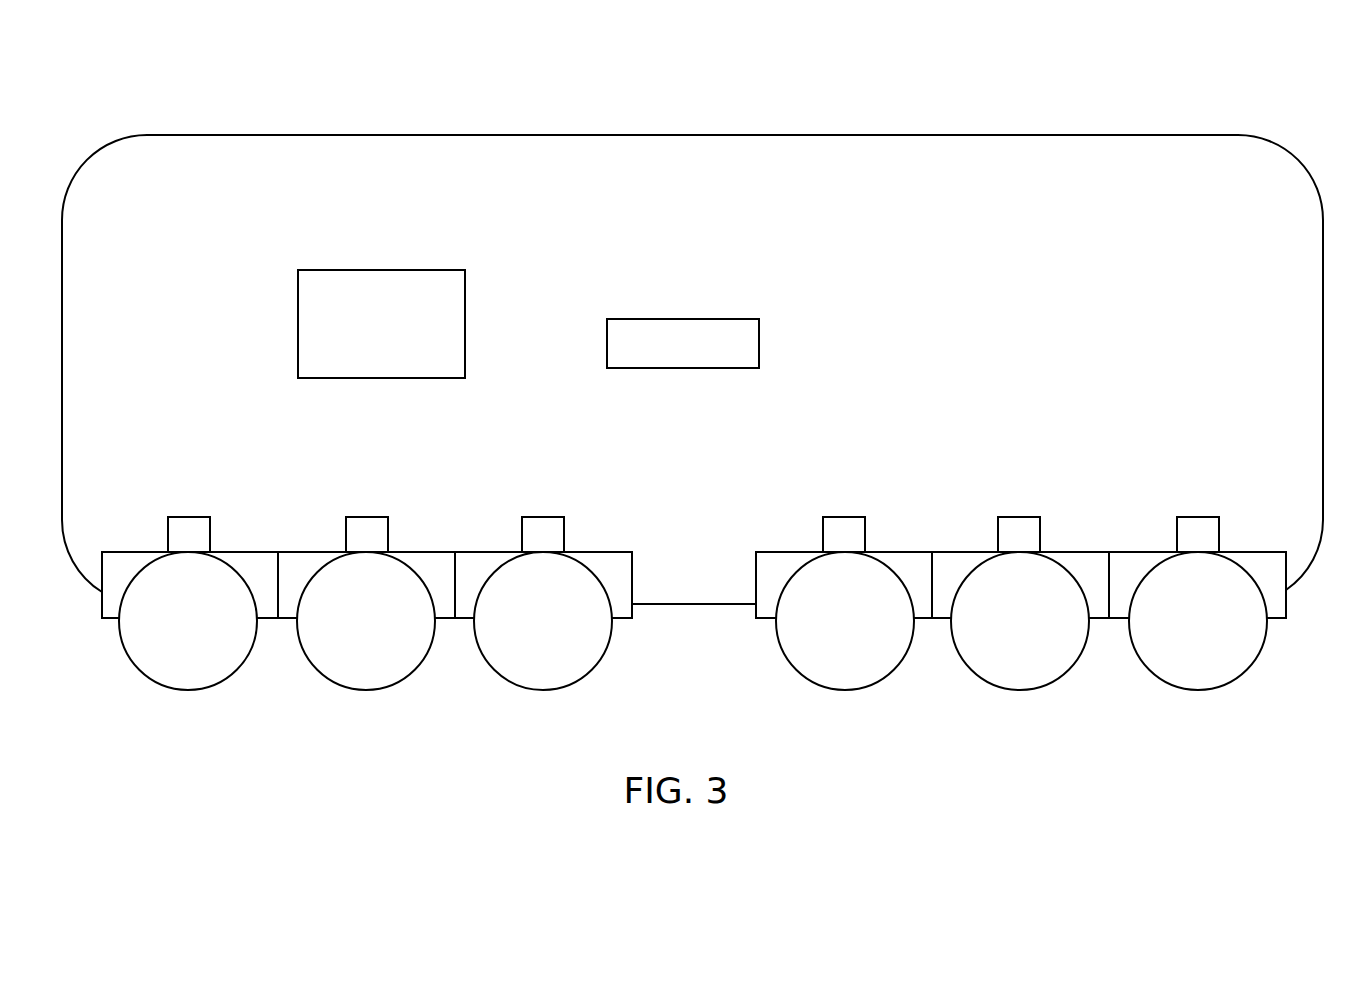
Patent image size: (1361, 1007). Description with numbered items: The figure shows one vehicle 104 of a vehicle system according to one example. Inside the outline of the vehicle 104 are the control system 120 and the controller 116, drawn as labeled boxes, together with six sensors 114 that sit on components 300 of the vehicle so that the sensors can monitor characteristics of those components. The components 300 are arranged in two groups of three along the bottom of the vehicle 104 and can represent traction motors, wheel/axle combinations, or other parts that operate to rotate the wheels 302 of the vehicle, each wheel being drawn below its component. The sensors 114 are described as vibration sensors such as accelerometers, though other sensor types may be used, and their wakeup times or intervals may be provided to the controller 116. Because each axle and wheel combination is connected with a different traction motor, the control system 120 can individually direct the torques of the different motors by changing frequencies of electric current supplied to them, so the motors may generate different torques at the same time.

The vehicle 104 is at (1272, 135).
The sensors 114 is at (186, 517).
The controller 116 is at (760, 340).
The control system 120 is at (465, 300).
The components 300 is at (312, 562).
The wheels 302 is at (232, 643).